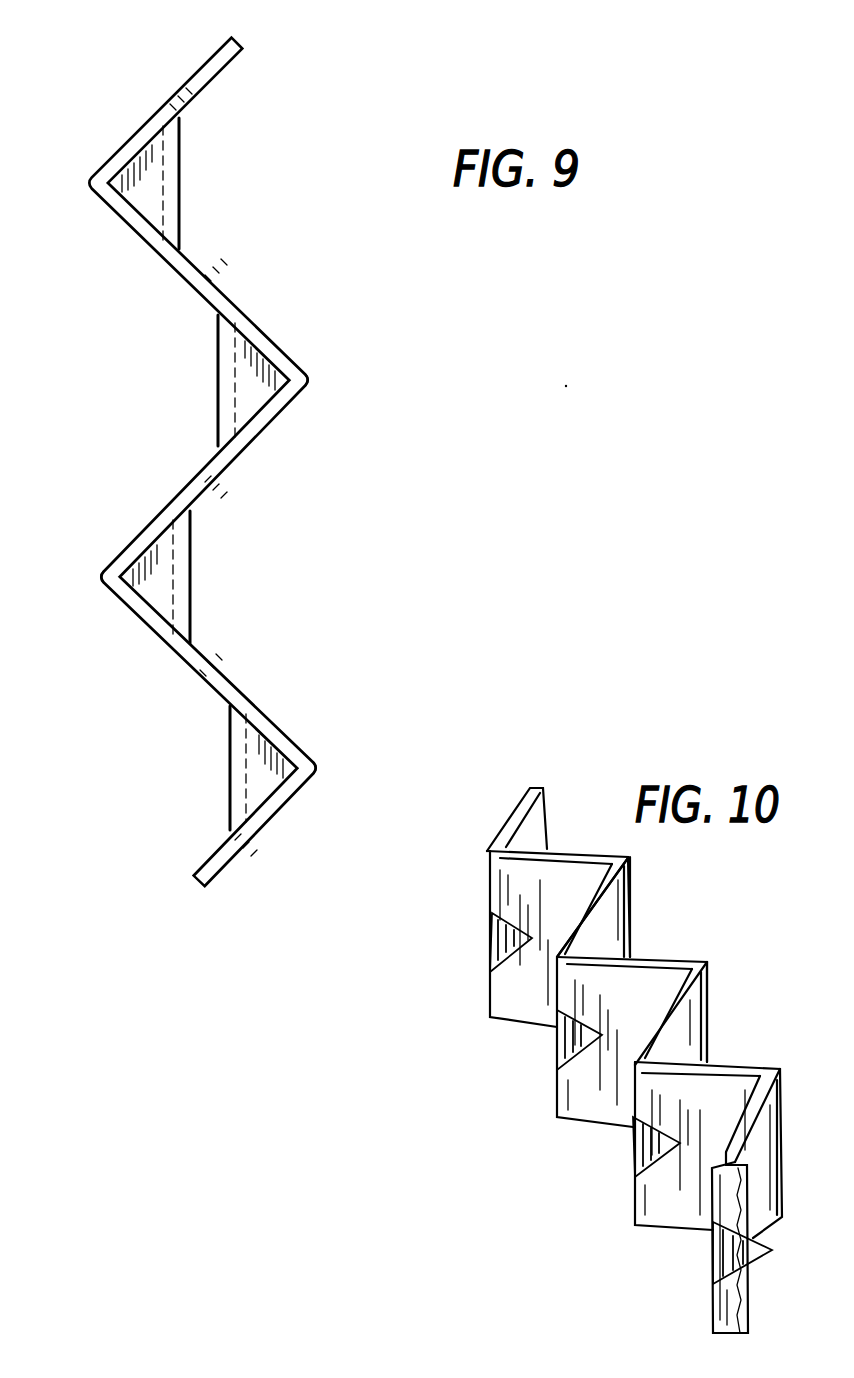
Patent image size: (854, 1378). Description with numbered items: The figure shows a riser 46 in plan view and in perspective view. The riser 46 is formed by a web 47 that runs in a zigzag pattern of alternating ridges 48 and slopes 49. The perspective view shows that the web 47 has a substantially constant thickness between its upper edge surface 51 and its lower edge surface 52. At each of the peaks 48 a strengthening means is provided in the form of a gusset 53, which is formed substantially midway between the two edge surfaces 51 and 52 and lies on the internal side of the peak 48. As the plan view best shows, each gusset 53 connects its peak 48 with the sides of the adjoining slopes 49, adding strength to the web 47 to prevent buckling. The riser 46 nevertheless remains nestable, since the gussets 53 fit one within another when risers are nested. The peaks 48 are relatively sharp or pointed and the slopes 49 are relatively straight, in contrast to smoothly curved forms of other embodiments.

In FIG. 9, the riser 46 is at (242, 890).
In FIG. 10, the riser 46 is at (623, 1021).
In FIG. 10, the web 47 is at (720, 1005).
In FIG. 9, the ridges 48 is at (314, 382).
In FIG. 10, the ridges 48 is at (630, 896).
In FIG. 9, the slopes 49 is at (223, 289).
In FIG. 10, the slopes 49 is at (553, 965).
In FIG. 10, the upper edge surface 51 is at (527, 799).
In FIG. 10, the lower edge surface 52 is at (670, 1232).
In FIG. 9, the gusset 53 is at (183, 177).
In FIG. 10, the gusset 53 is at (493, 948).